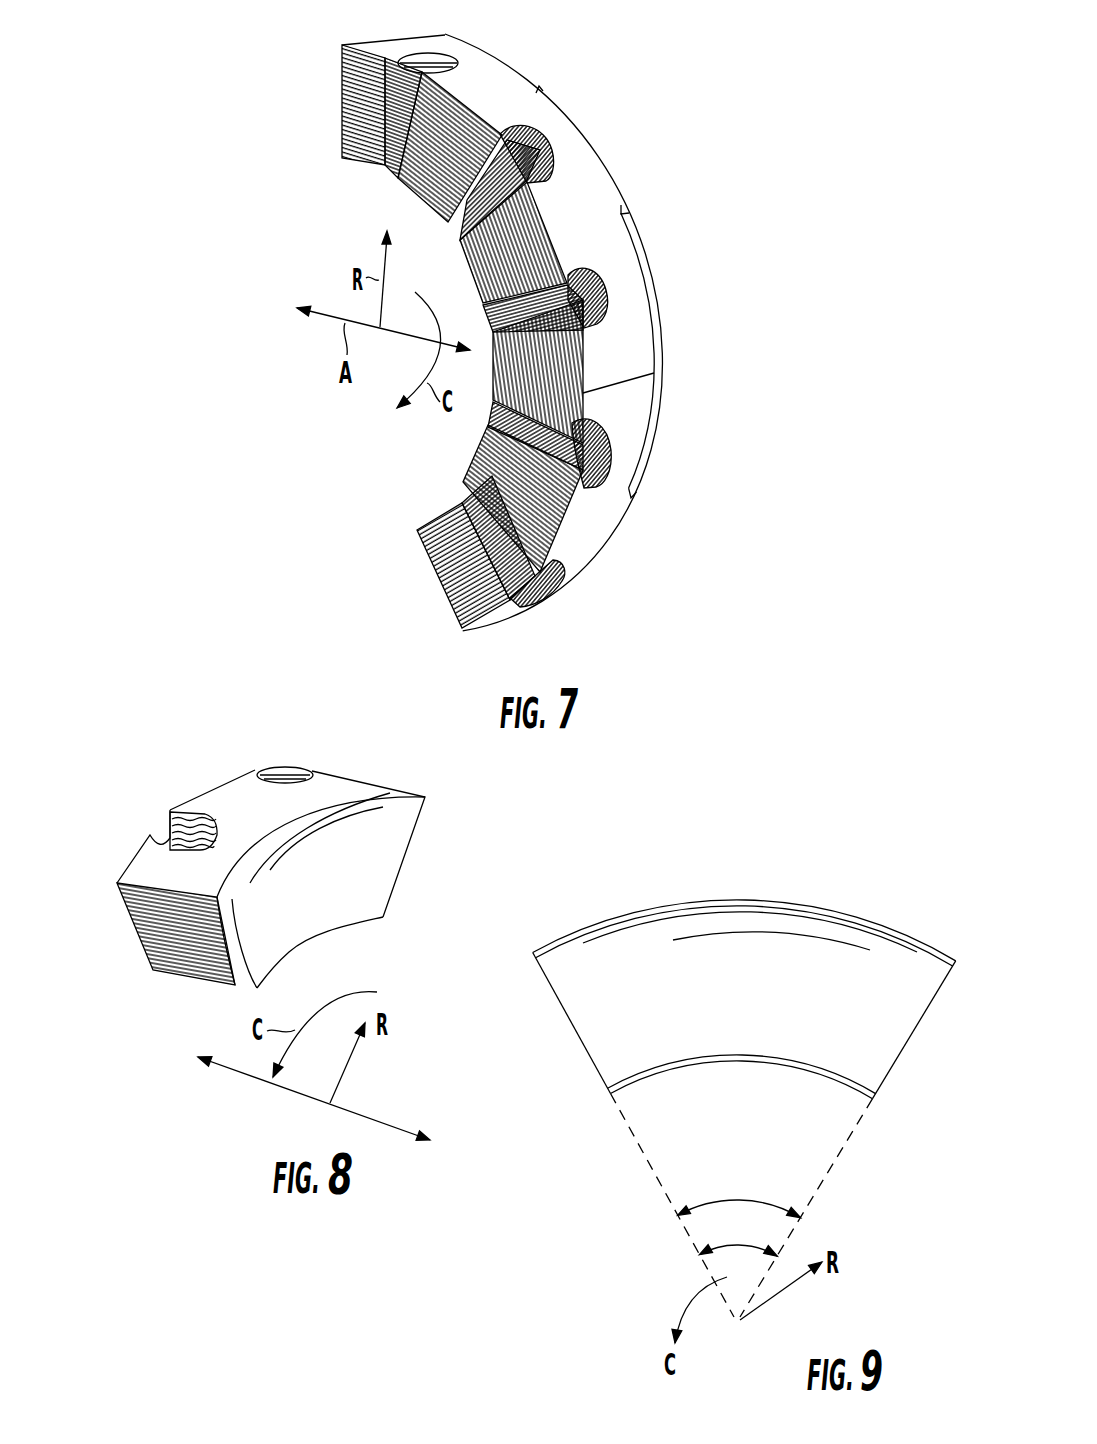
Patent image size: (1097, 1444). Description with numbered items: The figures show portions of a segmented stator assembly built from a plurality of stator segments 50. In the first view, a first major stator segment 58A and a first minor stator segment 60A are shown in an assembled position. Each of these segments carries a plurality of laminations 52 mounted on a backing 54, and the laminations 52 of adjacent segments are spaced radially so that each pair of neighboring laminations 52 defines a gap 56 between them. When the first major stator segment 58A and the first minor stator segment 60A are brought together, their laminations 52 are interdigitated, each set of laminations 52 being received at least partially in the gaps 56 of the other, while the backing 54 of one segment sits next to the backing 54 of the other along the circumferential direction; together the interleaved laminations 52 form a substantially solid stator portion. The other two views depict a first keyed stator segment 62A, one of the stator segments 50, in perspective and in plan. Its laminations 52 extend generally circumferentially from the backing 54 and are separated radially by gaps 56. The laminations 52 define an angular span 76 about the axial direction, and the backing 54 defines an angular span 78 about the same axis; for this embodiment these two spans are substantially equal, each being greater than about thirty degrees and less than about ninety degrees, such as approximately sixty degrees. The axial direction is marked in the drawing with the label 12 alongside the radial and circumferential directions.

In FIG. 7, the stator segments 50 is at (511, 332).
In FIG. 8, the stator segments 50 is at (234, 820).
In FIG. 9, the stator segments 50 is at (744, 1046).
In FIG. 7, the laminations 52 is at (636, 225).
In FIG. 8, the laminations 52 is at (143, 872).
In FIG. 7, the backing 54 is at (562, 102).
In FIG. 9, the backing 54 is at (847, 970).
In FIG. 7, the gaps 56 is at (333, 86).
In FIG. 8, the gaps 56 is at (125, 935).
In FIG. 7, the first major stator segment 58A is at (662, 440).
In FIG. 7, the first minor stator segment 60A is at (600, 160).
In FIG. 9, the first keyed stator segment 62A is at (744, 1046).
In FIG. 8, the axis 12 is at (367, 1113).
In FIG. 9, the angular span of the plurality of laminations 76 is at (743, 1200).
In FIG. 9, the angular span of the backing 78 is at (727, 1248).